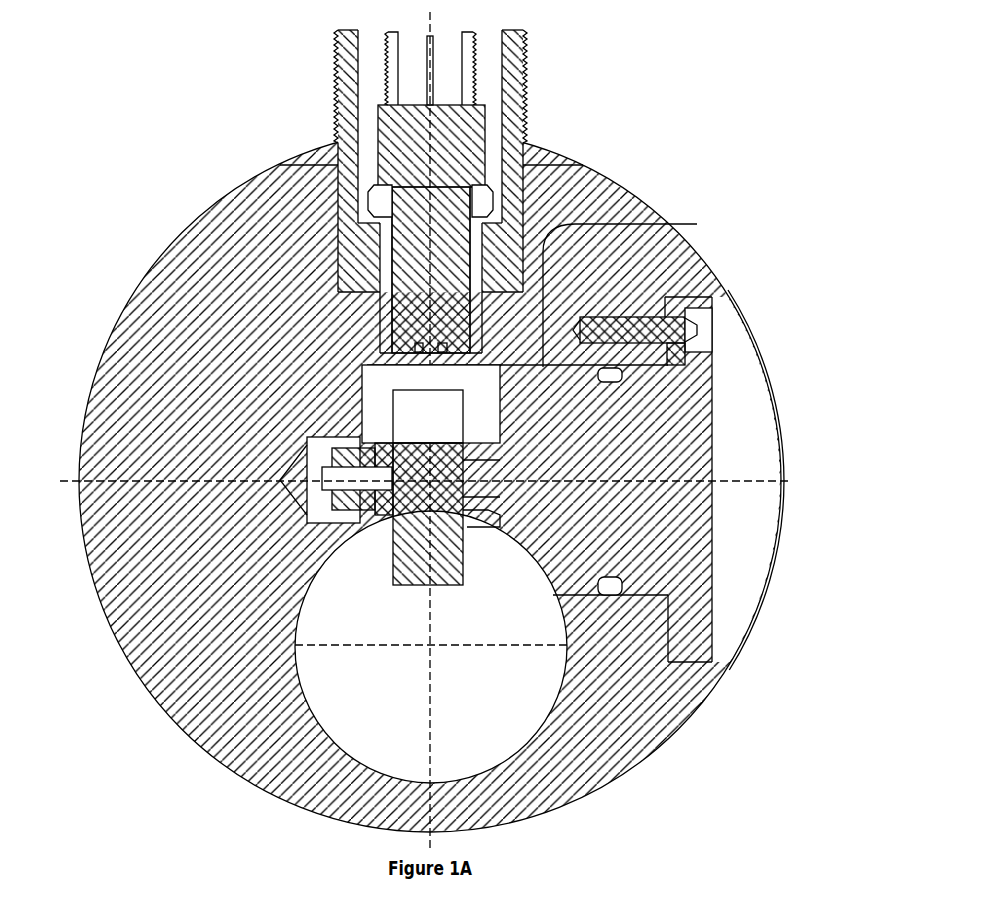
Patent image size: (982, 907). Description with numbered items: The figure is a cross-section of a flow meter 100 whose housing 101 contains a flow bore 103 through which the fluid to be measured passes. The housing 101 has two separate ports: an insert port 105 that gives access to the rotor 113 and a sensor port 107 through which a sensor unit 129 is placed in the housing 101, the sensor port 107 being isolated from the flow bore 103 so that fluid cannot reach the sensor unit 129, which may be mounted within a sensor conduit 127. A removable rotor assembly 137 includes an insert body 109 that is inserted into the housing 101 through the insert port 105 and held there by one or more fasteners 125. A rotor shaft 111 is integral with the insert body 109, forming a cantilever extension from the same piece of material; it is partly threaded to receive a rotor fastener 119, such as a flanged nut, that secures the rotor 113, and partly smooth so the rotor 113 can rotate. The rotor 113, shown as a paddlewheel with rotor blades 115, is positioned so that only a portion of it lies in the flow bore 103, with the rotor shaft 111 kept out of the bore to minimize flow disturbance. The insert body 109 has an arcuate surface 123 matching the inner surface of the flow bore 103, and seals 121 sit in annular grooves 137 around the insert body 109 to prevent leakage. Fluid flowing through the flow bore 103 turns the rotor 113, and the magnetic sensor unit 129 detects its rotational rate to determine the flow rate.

The flow meter 100 is at (116, 128).
The housing 101 is at (205, 260).
The flow bore 103 is at (515, 757).
The insert port 105 is at (697, 224).
The sensor port 107 is at (523, 191).
The insert body 109 is at (700, 418).
The rotor shaft 111 is at (415, 487).
The rotor 113 is at (461, 590).
The rotor blades 115 is at (393, 580).
The rotor fastener 119 is at (317, 487).
The seal 121 is at (612, 382).
The arcuate surface 123 is at (548, 540).
The fastener 125 is at (712, 315).
The sensor conduit 127 is at (520, 44).
The sensor unit 129 is at (388, 72).
The removable rotor assembly / annular groove 137 is at (734, 379).